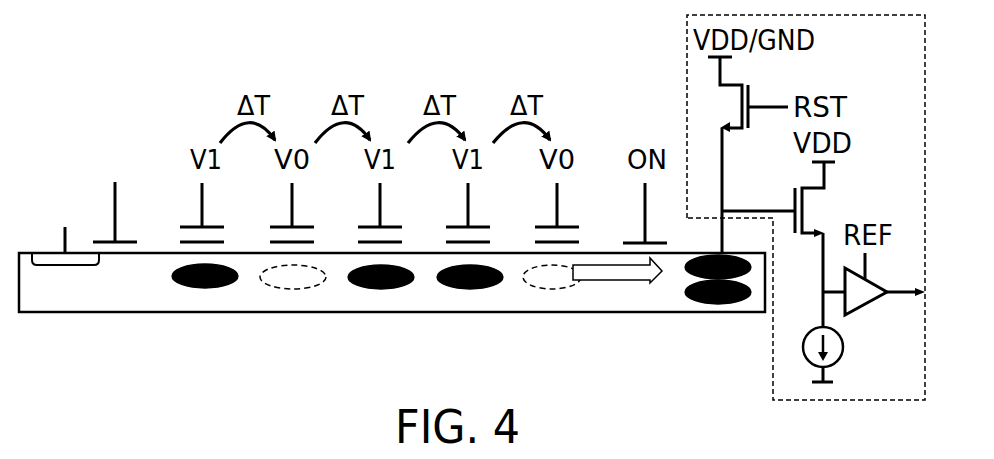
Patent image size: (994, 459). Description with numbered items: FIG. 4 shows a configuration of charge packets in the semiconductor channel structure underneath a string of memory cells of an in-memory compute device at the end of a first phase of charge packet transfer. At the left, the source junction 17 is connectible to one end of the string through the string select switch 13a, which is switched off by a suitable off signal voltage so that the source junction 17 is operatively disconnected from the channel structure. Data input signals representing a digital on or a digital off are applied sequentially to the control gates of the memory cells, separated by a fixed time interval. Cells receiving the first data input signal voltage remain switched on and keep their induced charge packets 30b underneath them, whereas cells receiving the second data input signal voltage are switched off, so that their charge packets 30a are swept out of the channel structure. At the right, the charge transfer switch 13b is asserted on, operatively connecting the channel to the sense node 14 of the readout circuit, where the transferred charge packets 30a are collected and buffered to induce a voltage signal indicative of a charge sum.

The string select switch 13a is at (100, 220).
The charge transfer switch 13b is at (630, 233).
The sense node 14 is at (677, 272).
The source junction 17 is at (50, 263).
The transferred charge packets 30a is at (290, 288).
The induced charge packets 30b is at (205, 287).